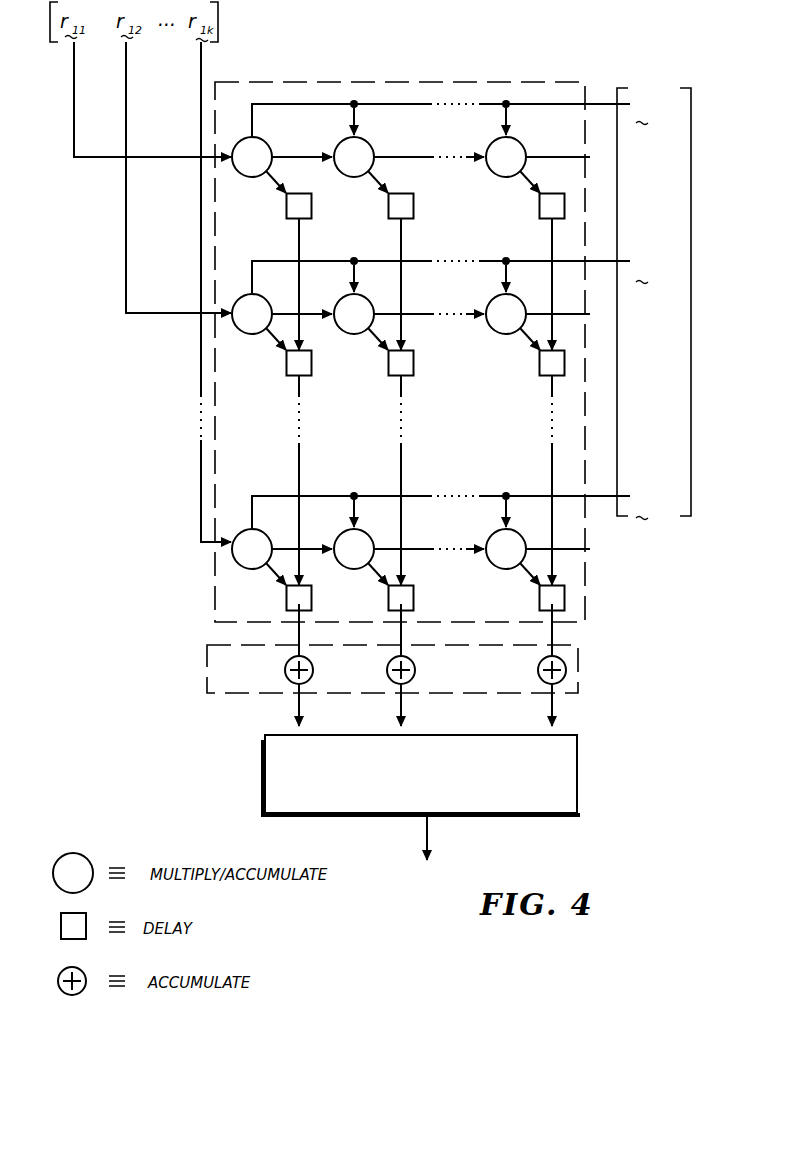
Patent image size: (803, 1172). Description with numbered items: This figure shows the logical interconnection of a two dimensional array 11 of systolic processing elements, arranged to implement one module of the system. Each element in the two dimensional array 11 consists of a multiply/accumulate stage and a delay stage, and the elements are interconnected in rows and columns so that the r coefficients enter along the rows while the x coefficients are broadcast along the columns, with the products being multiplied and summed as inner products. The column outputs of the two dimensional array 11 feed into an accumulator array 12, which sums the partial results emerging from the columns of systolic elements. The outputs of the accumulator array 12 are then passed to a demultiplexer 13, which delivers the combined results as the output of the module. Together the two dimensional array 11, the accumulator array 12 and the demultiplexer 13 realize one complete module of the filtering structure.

The two dimensional array 11 is at (592, 574).
The accumulator array 12 is at (454, 649).
The demultiplexer 13 is at (421, 772).